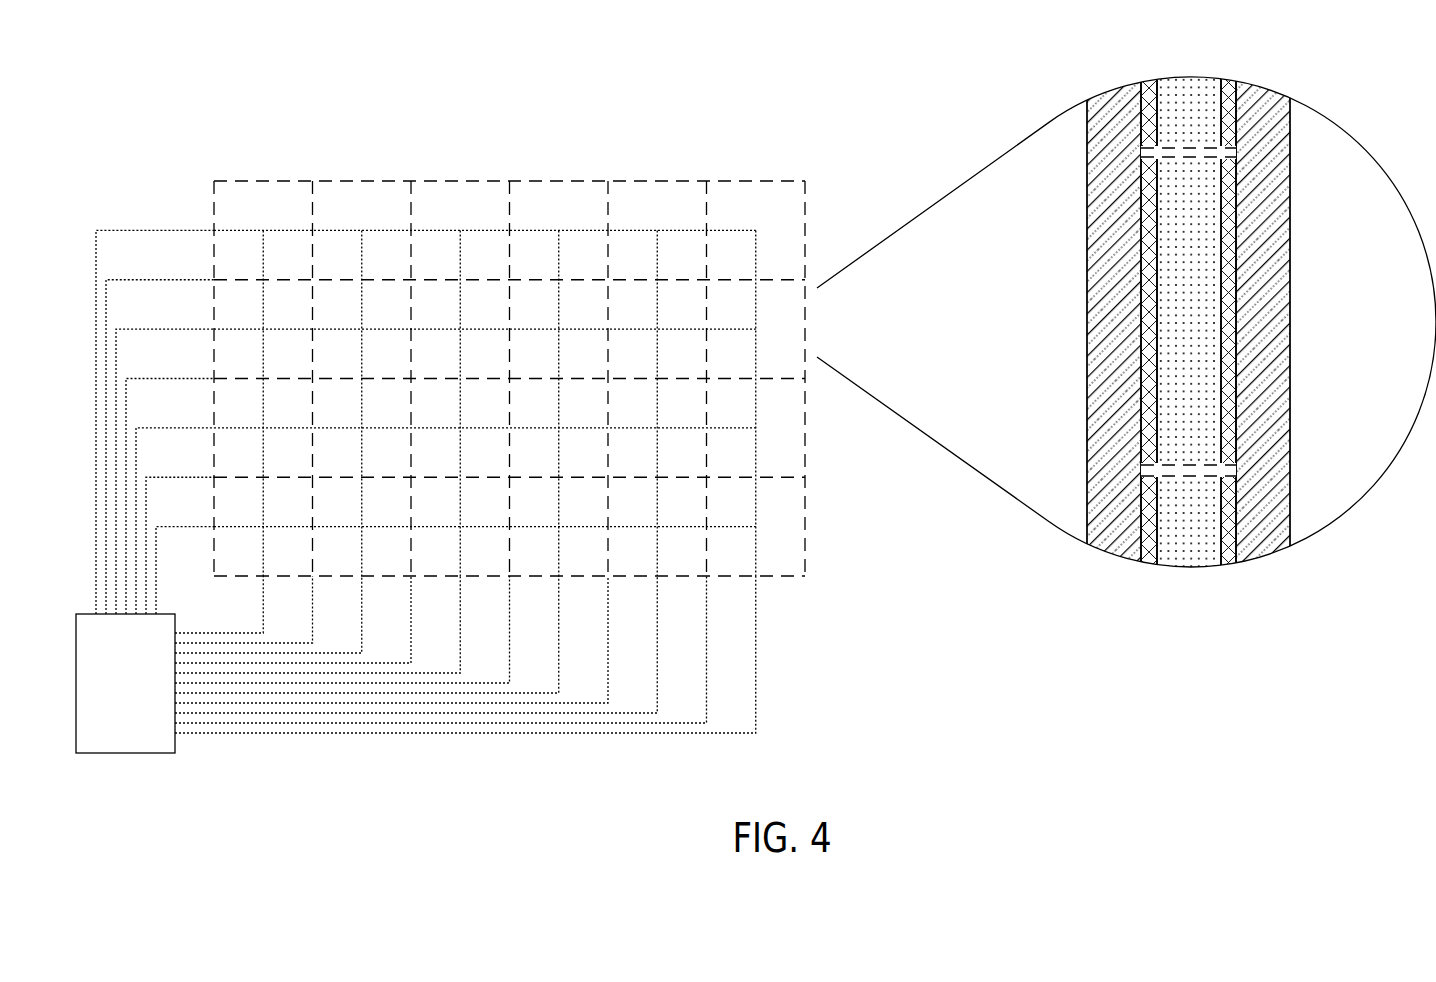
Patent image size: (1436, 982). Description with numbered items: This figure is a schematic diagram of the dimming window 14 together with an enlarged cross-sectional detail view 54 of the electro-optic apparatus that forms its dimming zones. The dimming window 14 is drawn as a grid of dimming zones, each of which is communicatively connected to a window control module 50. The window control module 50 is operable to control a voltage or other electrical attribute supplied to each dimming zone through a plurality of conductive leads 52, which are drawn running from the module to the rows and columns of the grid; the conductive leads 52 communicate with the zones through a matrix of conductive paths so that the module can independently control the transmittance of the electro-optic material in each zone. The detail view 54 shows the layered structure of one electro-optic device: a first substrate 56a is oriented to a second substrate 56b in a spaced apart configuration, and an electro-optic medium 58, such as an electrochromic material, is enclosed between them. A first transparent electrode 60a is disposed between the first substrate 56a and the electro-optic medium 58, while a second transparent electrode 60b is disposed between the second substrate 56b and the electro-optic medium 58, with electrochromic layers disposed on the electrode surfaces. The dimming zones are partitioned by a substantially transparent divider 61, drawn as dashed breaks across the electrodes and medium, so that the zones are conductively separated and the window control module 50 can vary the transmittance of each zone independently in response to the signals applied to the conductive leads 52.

The dimming window 14 is at (180, 111).
The window control module 50 is at (138, 724).
The conductive leads 52 is at (347, 714).
The enlarged detail view 54 is at (950, 127).
The first substrate 56a is at (1105, 252).
The second substrate 56b is at (1270, 268).
The electro-optic medium 58 is at (1187, 330).
The first transparent electrode 60a is at (1147, 312).
The second transparent electrode 60b is at (1233, 323).
The transparent divider 61 is at (1193, 152).